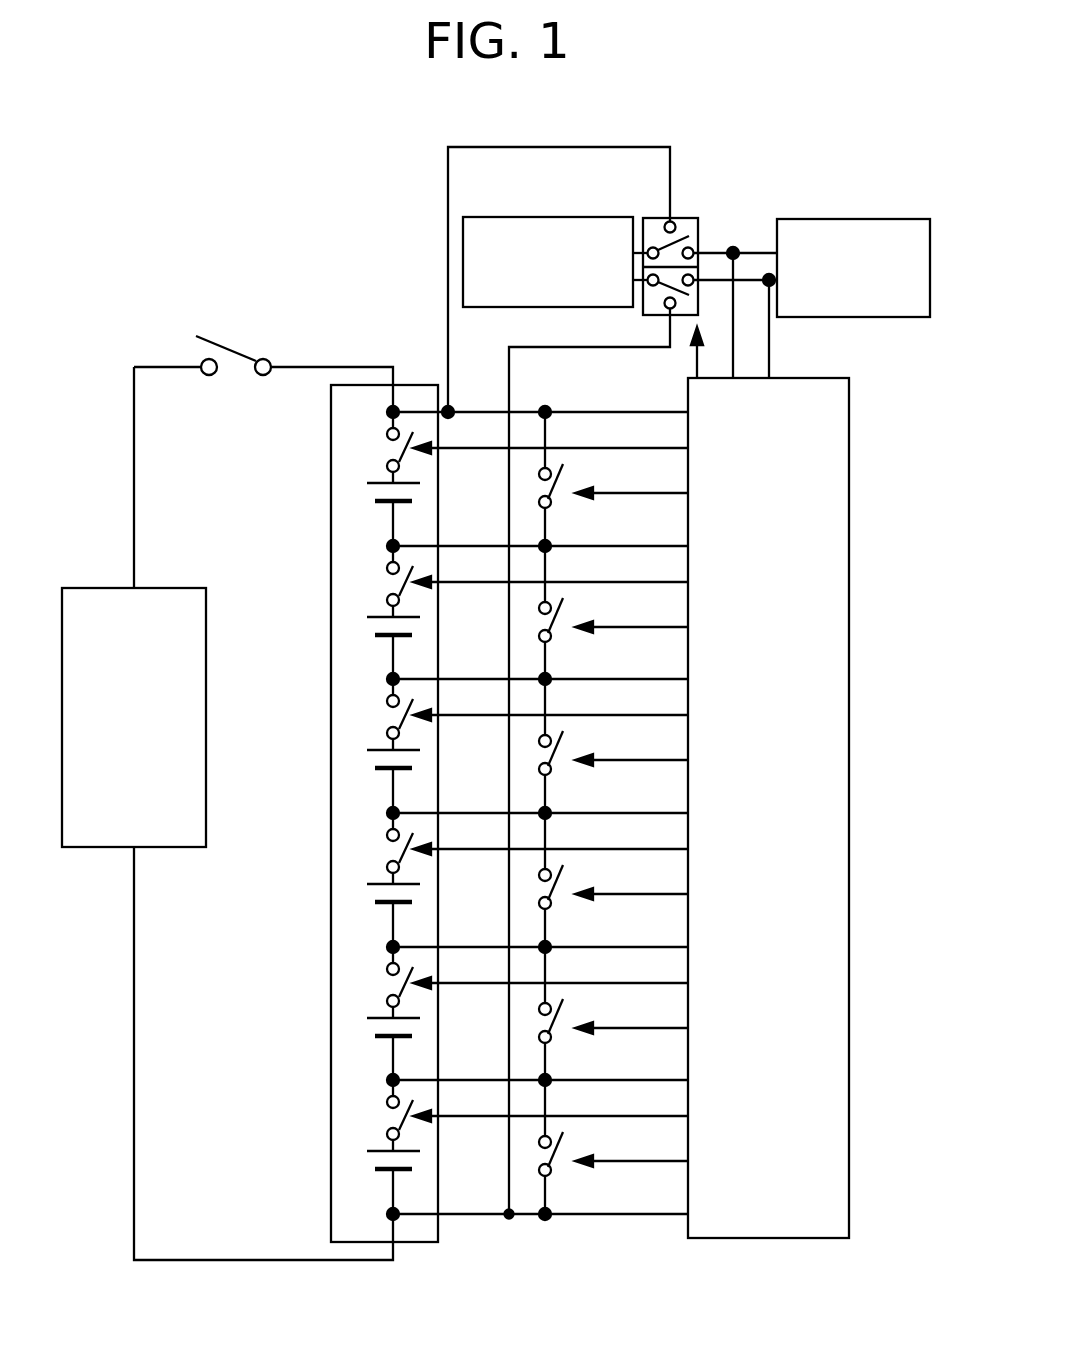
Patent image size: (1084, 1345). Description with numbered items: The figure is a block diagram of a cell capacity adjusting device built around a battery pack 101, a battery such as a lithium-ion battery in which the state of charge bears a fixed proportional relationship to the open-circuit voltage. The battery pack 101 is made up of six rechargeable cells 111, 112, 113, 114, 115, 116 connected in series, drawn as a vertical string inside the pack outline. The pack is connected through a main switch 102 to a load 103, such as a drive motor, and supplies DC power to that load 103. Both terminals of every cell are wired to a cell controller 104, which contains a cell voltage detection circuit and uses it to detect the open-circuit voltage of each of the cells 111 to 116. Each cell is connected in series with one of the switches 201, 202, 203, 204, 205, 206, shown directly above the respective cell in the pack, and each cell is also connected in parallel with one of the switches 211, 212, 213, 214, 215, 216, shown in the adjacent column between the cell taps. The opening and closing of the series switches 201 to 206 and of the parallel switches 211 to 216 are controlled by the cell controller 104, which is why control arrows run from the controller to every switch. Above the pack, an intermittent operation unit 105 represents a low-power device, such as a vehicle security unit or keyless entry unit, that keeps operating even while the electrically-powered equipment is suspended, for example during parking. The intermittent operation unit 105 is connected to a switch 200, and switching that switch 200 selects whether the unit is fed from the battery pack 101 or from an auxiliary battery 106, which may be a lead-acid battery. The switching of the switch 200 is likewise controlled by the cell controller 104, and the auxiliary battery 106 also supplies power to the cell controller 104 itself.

The battery pack 101 is at (355, 385).
The main switch 102 is at (230, 342).
The load 103 is at (85, 588).
The cell controller 104 is at (850, 555).
The intermittent operation unit 105 is at (548, 216).
The auxiliary battery 106 is at (807, 218).
The switch 200 is at (703, 228).
The switch 201 is at (373, 449).
The switch 202 is at (373, 583).
The switch 203 is at (373, 716).
The switch 204 is at (373, 850).
The switch 205 is at (373, 984).
The switch 206 is at (373, 1117).
The cell 111 is at (365, 494).
The cell 112 is at (365, 628).
The cell 113 is at (365, 761).
The cell 114 is at (365, 895).
The cell 115 is at (365, 1029).
The cell 116 is at (365, 1162).
The switch 211 is at (563, 480).
The switch 212 is at (563, 614).
The switch 213 is at (563, 747).
The switch 214 is at (563, 881).
The switch 215 is at (563, 1015).
The switch 216 is at (563, 1148).